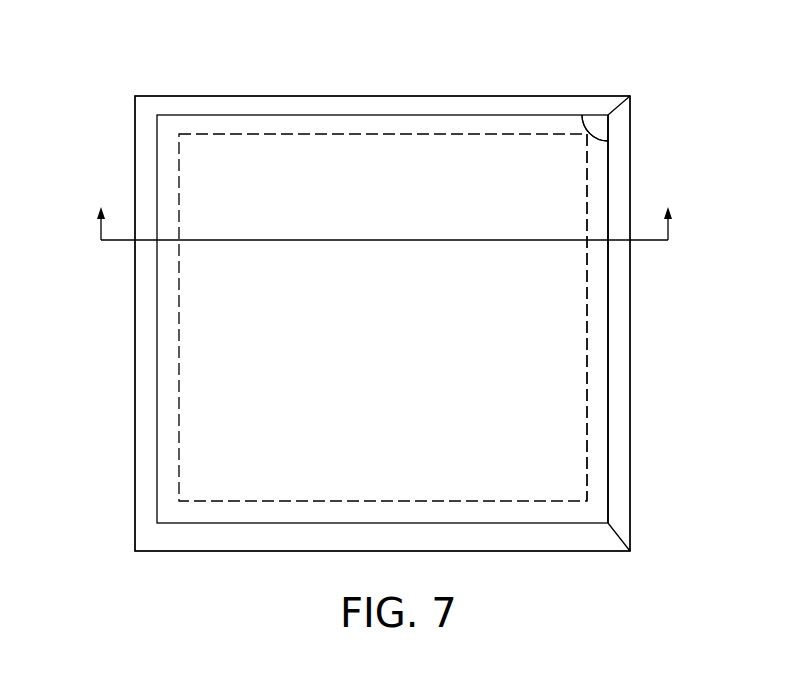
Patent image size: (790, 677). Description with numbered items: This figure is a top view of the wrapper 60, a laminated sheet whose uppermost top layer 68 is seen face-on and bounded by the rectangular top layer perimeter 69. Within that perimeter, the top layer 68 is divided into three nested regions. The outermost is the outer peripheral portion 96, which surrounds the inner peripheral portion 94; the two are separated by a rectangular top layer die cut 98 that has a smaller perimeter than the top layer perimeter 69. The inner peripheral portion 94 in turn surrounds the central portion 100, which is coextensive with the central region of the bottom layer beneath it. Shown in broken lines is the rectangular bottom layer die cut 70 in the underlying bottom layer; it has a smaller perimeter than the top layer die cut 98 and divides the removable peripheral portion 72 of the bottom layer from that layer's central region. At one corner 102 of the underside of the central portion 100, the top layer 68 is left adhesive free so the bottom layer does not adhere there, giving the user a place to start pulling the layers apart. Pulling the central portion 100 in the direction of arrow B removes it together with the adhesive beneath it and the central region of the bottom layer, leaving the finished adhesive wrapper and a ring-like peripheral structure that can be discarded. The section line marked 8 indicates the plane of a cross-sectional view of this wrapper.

The wrapper 60 is at (128, 56).
The top layer 68 is at (147, 122).
The top layer perimeter 69 is at (630, 143).
The bottom layer die cut 70 is at (587, 372).
The peripheral portion 72 is at (170, 167).
The inner peripheral portion 94 is at (598, 342).
The outer peripheral portion 96 is at (620, 417).
The top layer die cut 98 is at (610, 200).
The central portion 100 is at (418, 310).
The corner 102 is at (600, 130).
The arrow B is at (597, 123).
The section line 8- 8 is at (384, 212).